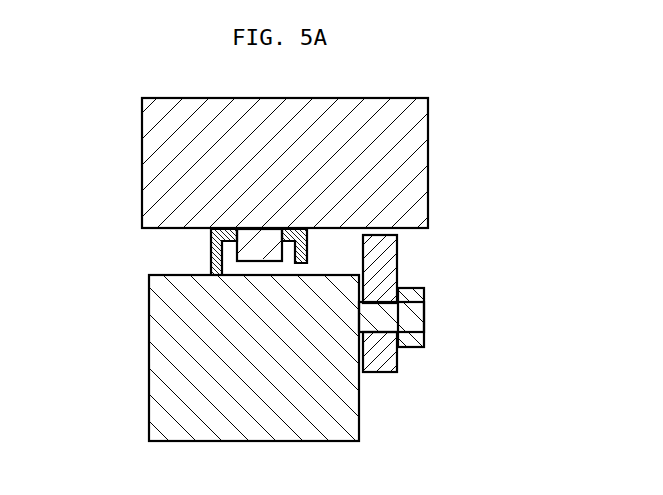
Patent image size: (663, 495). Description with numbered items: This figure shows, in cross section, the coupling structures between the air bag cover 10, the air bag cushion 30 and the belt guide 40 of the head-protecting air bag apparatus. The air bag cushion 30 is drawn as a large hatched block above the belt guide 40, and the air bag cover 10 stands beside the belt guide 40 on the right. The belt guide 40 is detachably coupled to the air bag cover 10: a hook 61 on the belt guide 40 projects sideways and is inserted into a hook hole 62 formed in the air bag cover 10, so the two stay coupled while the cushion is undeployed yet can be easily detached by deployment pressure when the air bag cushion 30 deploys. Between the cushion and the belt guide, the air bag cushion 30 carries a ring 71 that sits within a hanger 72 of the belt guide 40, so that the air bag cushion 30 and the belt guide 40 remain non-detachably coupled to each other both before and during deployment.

The air bag cushion 30 is at (162, 140).
The belt guide 40 is at (177, 367).
The ring 71 is at (258, 242).
The hanger 72 is at (212, 263).
The air bag cover 10 is at (386, 260).
The hook 61 is at (407, 318).
The hook hole 62 is at (379, 333).